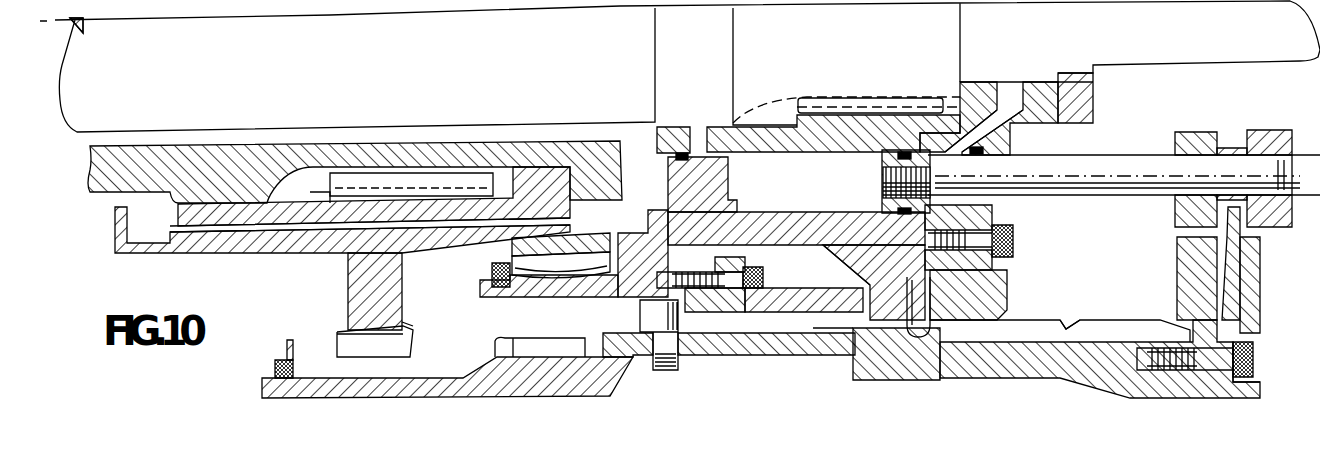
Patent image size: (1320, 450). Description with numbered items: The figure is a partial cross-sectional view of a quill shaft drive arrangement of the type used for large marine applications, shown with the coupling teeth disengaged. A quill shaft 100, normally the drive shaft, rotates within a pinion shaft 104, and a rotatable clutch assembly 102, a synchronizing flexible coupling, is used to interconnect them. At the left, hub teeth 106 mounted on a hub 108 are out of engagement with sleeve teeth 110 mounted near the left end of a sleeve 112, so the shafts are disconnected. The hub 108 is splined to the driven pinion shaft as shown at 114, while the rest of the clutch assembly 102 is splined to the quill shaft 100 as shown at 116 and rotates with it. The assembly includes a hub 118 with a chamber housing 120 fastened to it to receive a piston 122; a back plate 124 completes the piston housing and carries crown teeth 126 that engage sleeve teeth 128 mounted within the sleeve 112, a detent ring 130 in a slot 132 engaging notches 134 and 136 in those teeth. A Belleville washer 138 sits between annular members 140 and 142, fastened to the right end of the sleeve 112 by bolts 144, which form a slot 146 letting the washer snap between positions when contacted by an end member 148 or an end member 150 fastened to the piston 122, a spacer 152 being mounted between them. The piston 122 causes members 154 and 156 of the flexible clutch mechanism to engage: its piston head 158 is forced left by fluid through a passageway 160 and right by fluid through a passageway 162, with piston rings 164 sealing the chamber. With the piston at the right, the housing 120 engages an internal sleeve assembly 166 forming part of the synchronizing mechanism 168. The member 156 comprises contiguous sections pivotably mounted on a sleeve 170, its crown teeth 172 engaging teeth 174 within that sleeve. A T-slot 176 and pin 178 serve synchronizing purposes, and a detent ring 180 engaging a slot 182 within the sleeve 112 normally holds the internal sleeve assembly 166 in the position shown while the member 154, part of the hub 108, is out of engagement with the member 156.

The quill shaft 100 is at (268, 66).
The rotatable clutch assembly 102 is at (795, 362).
The pinion shaft 104 is at (110, 183).
The hub teeth 106 is at (334, 342).
The hub 108 is at (197, 253).
The sleeve teeth 110 is at (490, 350).
The sleeve 112 is at (945, 380).
The spline 114 is at (402, 172).
The spline 116 is at (843, 100).
The hub 118 is at (1020, 137).
The chamber housing 120 is at (767, 245).
The piston 122 is at (1122, 152).
The back plate 124 is at (998, 268).
The crown teeth 126 is at (1005, 320).
The sleeve teeth 128 is at (1120, 320).
The detent ring 130 is at (905, 330).
The slot 132 is at (846, 270).
The notch 134 is at (903, 348).
The notch 136 is at (1066, 326).
The Belleville washer 138 is at (1245, 235).
The annular member 140 is at (1262, 385).
The annular member 142 is at (1215, 400).
The bolts 144 is at (1255, 350).
The slot 146 is at (1185, 232).
The end member 148 is at (1275, 128).
The end member 150 is at (1186, 130).
The spacer 152 is at (1232, 147).
The member 154 is at (438, 258).
The member 156 is at (611, 237).
The piston head 158 is at (885, 208).
The passageway 160 is at (1010, 82).
The passageway 162 is at (703, 125).
The piston rings 164 is at (683, 152).
The internal sleeve assembly 166 is at (660, 212).
The synchronizing mechanism 168 is at (463, 278).
The sleeve 170 is at (624, 233).
The crown teeth 172 is at (552, 278).
The teeth 174 is at (505, 293).
The T-slot 176 is at (605, 322).
The pin 178 is at (637, 357).
The detent ring 180 is at (710, 333).
The slot 182 is at (733, 332).